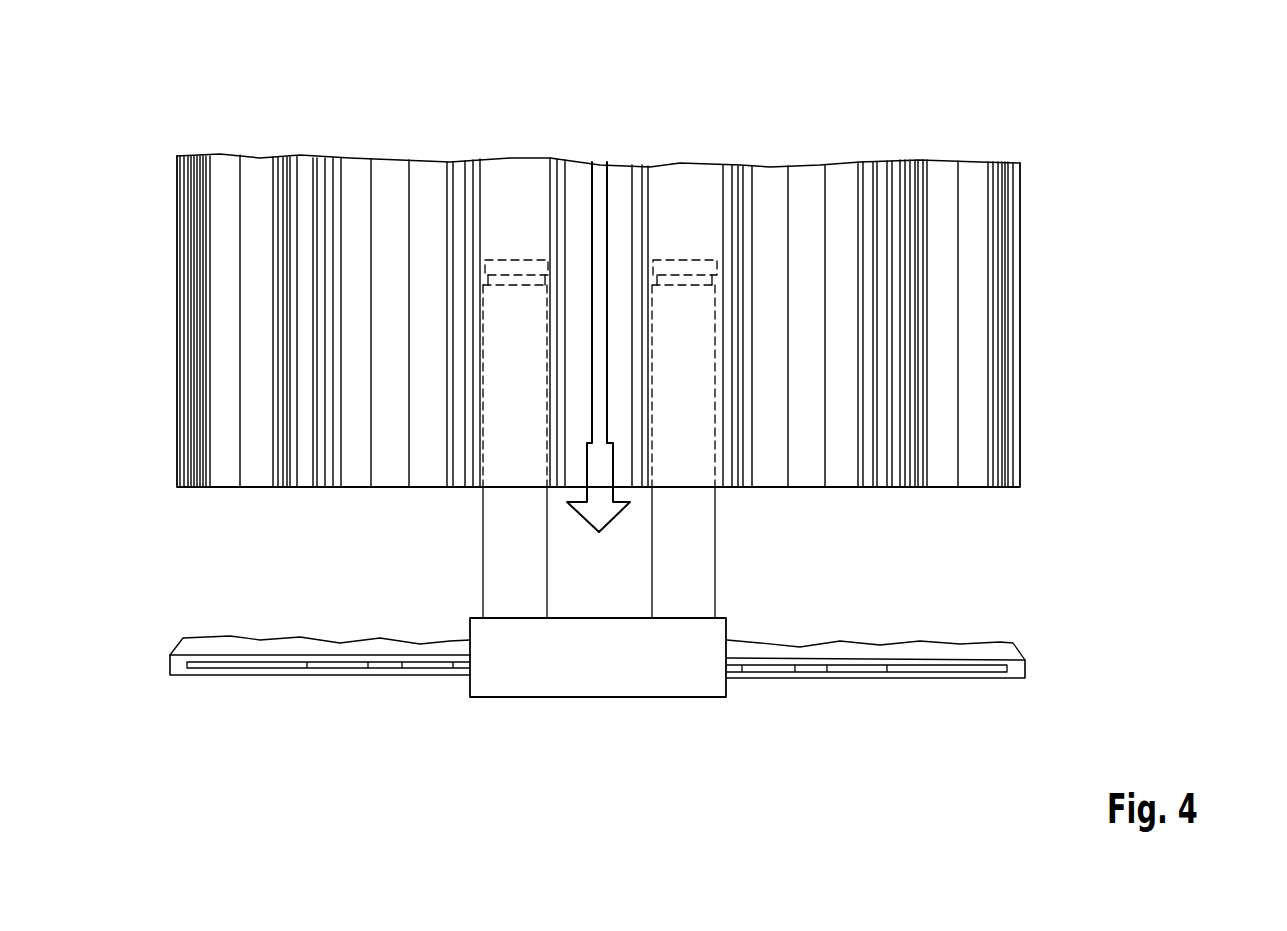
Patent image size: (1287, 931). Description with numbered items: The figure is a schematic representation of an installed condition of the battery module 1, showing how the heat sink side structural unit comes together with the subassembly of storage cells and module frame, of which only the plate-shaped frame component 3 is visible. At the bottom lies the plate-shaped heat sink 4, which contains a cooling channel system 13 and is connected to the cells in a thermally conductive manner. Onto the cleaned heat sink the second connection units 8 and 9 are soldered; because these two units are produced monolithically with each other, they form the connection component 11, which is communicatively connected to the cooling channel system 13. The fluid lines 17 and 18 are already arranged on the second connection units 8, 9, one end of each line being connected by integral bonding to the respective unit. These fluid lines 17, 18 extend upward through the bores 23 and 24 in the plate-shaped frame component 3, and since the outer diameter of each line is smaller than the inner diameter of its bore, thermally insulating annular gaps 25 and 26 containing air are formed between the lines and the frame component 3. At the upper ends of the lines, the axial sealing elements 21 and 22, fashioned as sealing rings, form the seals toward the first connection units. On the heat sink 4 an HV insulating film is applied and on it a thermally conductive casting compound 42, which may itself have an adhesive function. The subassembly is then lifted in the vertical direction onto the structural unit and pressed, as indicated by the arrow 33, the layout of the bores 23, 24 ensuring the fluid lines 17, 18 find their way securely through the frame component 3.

The battery module 1 is at (1008, 114).
The plate-shaped frame component 3 is at (975, 342).
The plate-shaped heat sink 4 is at (203, 670).
The second connection unit 8 is at (500, 675).
The second connection unit 9 is at (692, 682).
The connection component 11 is at (600, 698).
The cooling channel system 13 is at (295, 667).
The fluid line 17 is at (503, 585).
The fluid line 18 is at (700, 585).
The axial sealing element 21 is at (518, 262).
The axial sealing element 22 is at (680, 262).
The bore 23 is at (483, 246).
The bore 24 is at (718, 285).
The thermally insulating annular gap 25 is at (483, 452).
The thermally insulating annular gap 26 is at (717, 430).
The arrow 33 is at (602, 517).
The thermally conductive casting compound 42 is at (932, 652).